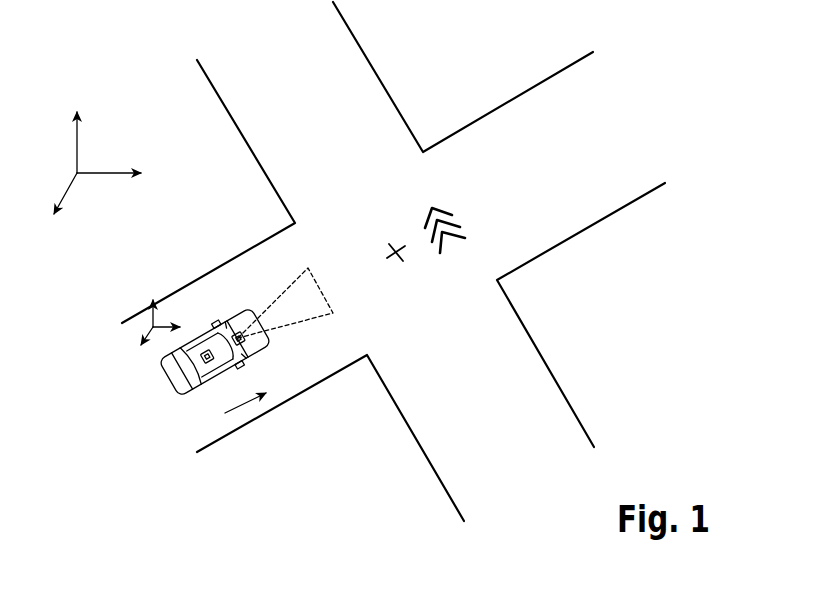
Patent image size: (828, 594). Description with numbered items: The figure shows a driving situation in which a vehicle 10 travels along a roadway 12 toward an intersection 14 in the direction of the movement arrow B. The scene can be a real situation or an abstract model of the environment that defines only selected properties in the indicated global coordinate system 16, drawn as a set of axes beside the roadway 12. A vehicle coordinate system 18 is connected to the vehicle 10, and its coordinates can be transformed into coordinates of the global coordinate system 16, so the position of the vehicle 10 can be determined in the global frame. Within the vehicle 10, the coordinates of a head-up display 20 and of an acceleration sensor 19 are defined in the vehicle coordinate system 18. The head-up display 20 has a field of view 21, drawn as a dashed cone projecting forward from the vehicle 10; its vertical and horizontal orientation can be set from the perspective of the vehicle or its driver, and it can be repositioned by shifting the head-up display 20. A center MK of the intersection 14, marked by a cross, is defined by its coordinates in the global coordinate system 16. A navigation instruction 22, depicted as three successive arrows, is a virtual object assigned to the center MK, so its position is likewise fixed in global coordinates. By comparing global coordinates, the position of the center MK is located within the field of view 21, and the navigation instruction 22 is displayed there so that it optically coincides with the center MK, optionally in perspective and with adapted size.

The vehicle 10 is at (155, 380).
The roadway 12 is at (200, 277).
The intersection 14 is at (430, 126).
The global (environment) coordinate system 16 is at (100, 145).
The vehicle coordinate system 18 is at (131, 331).
The acceleration sensor 19 is at (211, 366).
The head-up display (HUD) 20 is at (243, 348).
The field of view 21 is at (276, 304).
The navigation instruction (virtual object) 22 is at (465, 216).
The center of the intersection MK is at (402, 263).
The direction of movement of the vehicle B is at (242, 408).